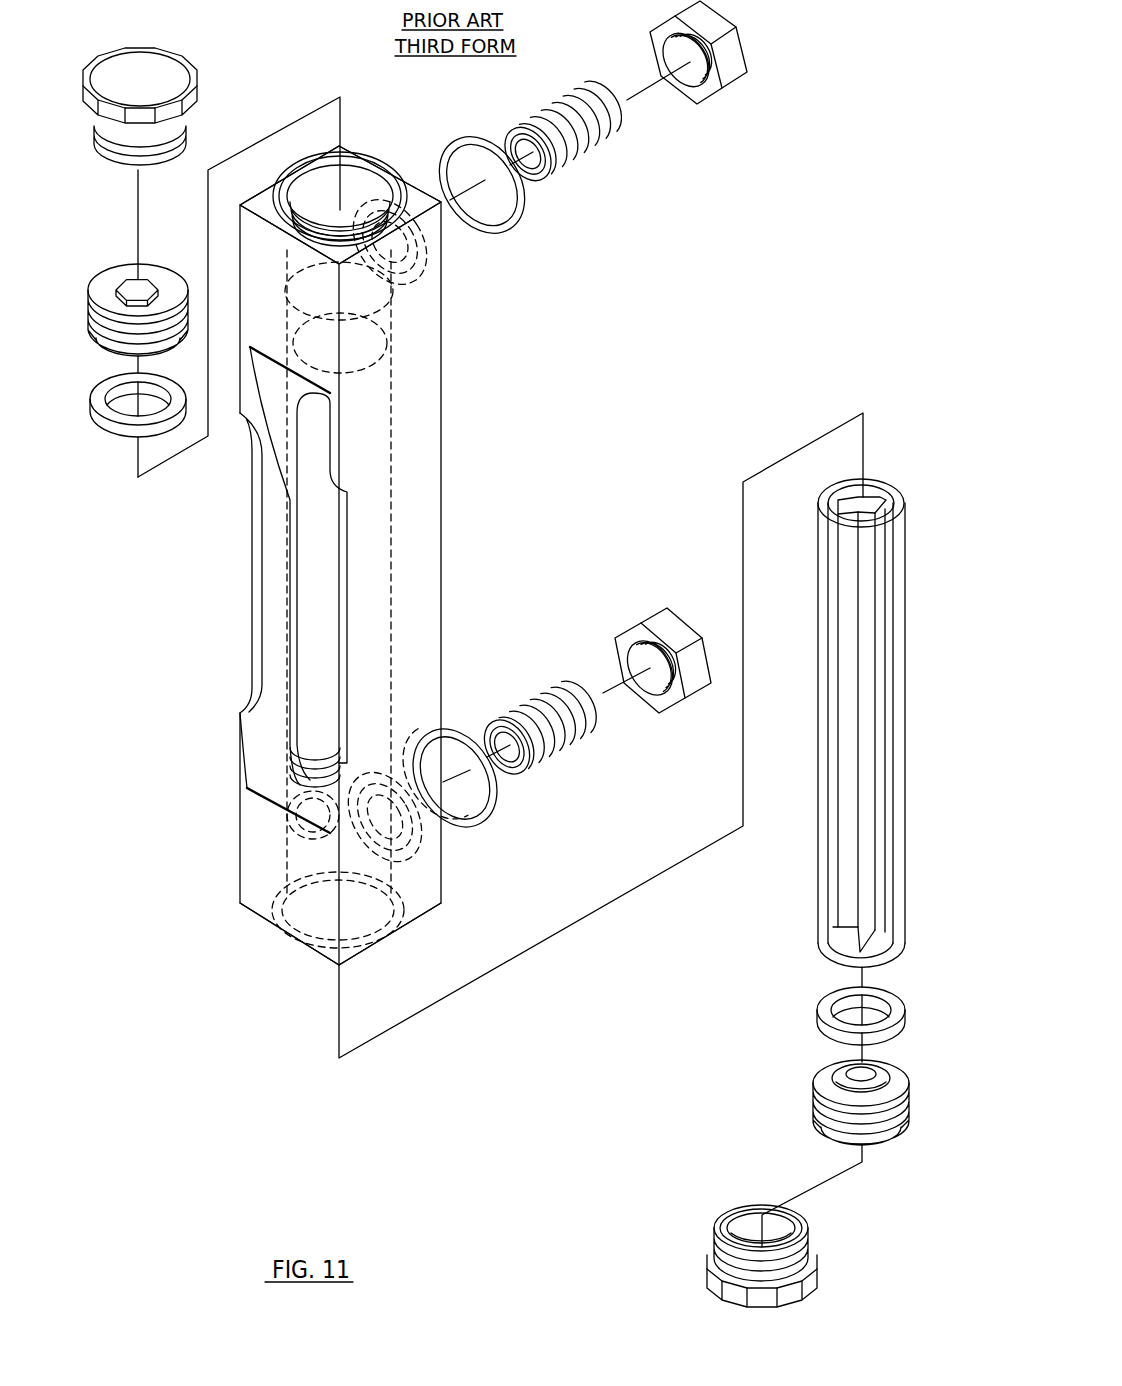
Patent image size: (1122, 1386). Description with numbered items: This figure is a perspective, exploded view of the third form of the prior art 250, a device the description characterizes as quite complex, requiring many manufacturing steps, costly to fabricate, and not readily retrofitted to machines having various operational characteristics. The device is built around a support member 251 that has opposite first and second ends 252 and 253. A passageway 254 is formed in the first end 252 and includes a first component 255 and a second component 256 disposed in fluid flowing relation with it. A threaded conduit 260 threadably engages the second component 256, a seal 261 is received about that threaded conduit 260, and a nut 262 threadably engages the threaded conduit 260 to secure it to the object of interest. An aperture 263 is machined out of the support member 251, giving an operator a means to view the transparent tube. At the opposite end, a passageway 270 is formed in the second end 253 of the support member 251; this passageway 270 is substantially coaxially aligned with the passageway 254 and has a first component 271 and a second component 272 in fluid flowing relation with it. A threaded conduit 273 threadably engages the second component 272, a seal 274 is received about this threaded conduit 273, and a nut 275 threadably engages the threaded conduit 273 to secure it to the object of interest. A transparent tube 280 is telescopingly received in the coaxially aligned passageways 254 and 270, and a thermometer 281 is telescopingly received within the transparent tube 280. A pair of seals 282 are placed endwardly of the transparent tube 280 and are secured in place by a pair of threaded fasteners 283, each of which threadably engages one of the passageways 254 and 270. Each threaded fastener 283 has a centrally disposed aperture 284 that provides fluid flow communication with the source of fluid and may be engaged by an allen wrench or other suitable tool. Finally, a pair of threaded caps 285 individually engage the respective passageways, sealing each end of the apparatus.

The third form of the prior art 250 is at (249, 584).
The support member 251 is at (417, 478).
The first end 252 is at (422, 898).
The second end 253 is at (425, 362).
The passageway 254 is at (298, 720).
The first component 255 is at (290, 853).
The second component 256 is at (420, 848).
The threaded conduit 260 is at (587, 737).
The seal 261 is at (447, 740).
The nut 262 is at (660, 623).
The aperture 263 is at (292, 542).
The passageway 270 is at (350, 188).
The first component 271 is at (440, 316).
The second component 272 is at (432, 247).
The threaded conduit 273 is at (566, 97).
The seal 274 is at (465, 135).
The nut 275 is at (732, 48).
The transparent tube 280 is at (818, 832).
The thermometer 281 is at (862, 893).
The seals 282 is at (126, 425).
The threaded fasteners 283 is at (117, 277).
The centrally disposed aperture 284 is at (142, 281).
The threaded caps 285 is at (174, 74).